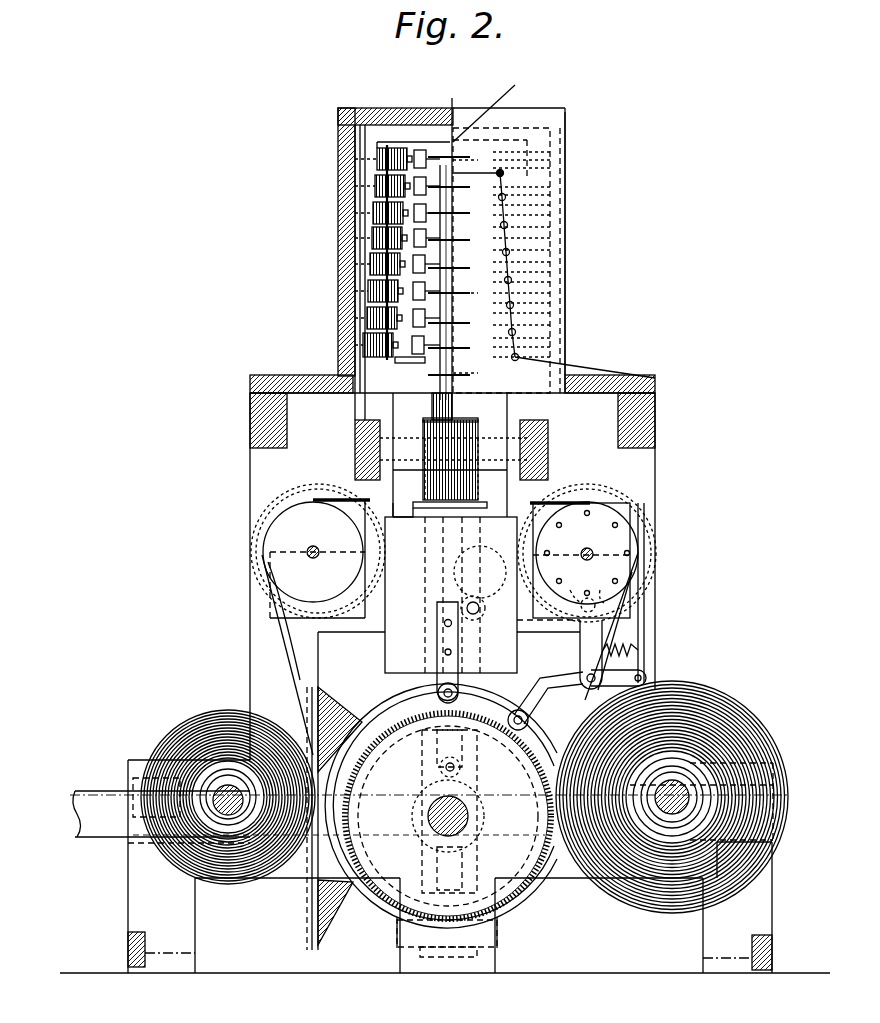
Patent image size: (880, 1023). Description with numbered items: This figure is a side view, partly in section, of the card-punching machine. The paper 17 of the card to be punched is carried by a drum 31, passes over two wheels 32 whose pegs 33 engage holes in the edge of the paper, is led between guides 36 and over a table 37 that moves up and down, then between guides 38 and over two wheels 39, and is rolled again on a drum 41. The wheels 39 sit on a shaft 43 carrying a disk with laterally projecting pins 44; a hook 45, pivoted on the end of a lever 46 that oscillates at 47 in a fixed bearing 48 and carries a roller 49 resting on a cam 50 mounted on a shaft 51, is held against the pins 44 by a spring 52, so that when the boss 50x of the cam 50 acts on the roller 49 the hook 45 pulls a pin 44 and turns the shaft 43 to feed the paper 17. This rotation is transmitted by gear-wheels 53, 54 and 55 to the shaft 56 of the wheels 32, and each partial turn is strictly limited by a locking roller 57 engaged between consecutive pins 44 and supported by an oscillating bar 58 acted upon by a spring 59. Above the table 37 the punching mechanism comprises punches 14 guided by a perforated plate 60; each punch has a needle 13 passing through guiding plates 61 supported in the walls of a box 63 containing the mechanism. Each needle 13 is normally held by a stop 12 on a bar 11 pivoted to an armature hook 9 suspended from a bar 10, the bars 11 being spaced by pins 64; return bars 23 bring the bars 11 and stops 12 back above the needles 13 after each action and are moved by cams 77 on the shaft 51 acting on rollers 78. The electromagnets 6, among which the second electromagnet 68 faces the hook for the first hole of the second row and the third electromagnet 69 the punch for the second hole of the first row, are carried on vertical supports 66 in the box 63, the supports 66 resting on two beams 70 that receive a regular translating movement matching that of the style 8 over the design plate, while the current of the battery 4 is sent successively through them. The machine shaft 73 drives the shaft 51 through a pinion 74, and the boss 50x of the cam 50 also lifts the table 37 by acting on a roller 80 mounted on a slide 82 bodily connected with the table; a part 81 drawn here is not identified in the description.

The battery 4 is at (390, 358).
The electromagnet 6 is at (360, 335).
The contacting needle or style 8 is at (407, 369).
The armature hook 9 is at (424, 304).
The supporting bar 10 is at (427, 181).
The pivoted bar 11 is at (421, 286).
The stop plate 12 is at (455, 265).
The needle 13 is at (452, 287).
The punch 14 is at (455, 470).
The paper 17 is at (292, 681).
The return bar 23 is at (423, 258).
The drum 31 is at (205, 717).
The paper-feeding wheels 32 is at (282, 573).
The pegs 33 is at (278, 598).
The guides 36 is at (378, 498).
The table 37 is at (416, 492).
The guides 38 is at (533, 502).
The wheels 39 is at (600, 515).
The drum 41 is at (725, 712).
The shaft 43 is at (591, 552).
The pins 44 is at (591, 585).
The hook 45 is at (645, 622).
The lever 46 is at (618, 685).
The pivot 47 is at (548, 698).
The fixed bearing 48 is at (582, 650).
The roller 49 is at (519, 709).
The cam 50 is at (530, 752).
The boss 50x is at (441, 820).
The shaft 51 is at (472, 802).
The spring 52 is at (639, 651).
The gear-wheel 53 is at (655, 549).
The gear-wheel 54 is at (419, 622).
The gear-wheel 55 is at (318, 540).
The shaft 56 is at (312, 546).
The locking roller 57 is at (598, 608).
The oscillating bar 58 is at (485, 617).
The spring 59 is at (482, 562).
The perforated guide plate 60 is at (439, 496).
The guiding plates 61 is at (468, 247).
The box 63 is at (566, 210).
The pins 64 is at (482, 234).
The vertical supports 66 is at (540, 145).
The second electromagnet 68 is at (368, 308).
The third electromagnet 69 is at (370, 265).
The beams 70 is at (356, 430).
The shaft 73 is at (98, 837).
The pinion 74 is at (312, 905).
The cams 77 is at (415, 838).
The rollers 78 is at (462, 769).
The roller 80 is at (437, 692).
The arm 81 is at (460, 666).
The slide 82 is at (390, 652).